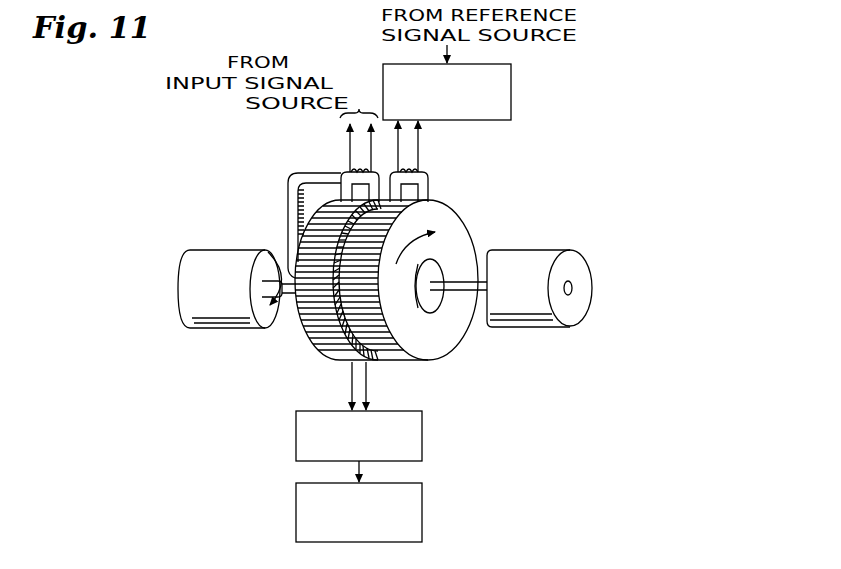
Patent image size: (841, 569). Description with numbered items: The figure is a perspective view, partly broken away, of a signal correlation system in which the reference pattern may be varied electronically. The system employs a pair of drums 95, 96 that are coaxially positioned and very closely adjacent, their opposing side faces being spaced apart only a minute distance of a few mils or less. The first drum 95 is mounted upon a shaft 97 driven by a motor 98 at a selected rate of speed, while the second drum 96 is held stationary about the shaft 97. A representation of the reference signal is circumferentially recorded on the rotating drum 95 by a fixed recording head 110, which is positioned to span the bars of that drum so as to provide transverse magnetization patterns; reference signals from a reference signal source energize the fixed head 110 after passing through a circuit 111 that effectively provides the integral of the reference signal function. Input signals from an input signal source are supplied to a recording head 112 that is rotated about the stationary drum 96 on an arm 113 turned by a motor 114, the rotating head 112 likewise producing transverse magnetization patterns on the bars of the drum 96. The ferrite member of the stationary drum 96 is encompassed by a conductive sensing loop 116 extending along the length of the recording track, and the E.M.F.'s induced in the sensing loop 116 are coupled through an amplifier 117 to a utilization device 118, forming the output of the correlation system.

The rotating drum 95 is at (463, 232).
The stationary drum 96 is at (312, 348).
The shaft 97 is at (487, 297).
The motor 98 is at (553, 247).
The fixed recording head 110 is at (424, 170).
The integrating circuit 111 is at (511, 73).
The rotating recording head 112 is at (348, 170).
The arm 113 is at (287, 210).
The motor 114 is at (216, 250).
The conductive sensing loop 116 is at (352, 390).
The amplifier 117 is at (422, 437).
The utilization device 118 is at (422, 503).